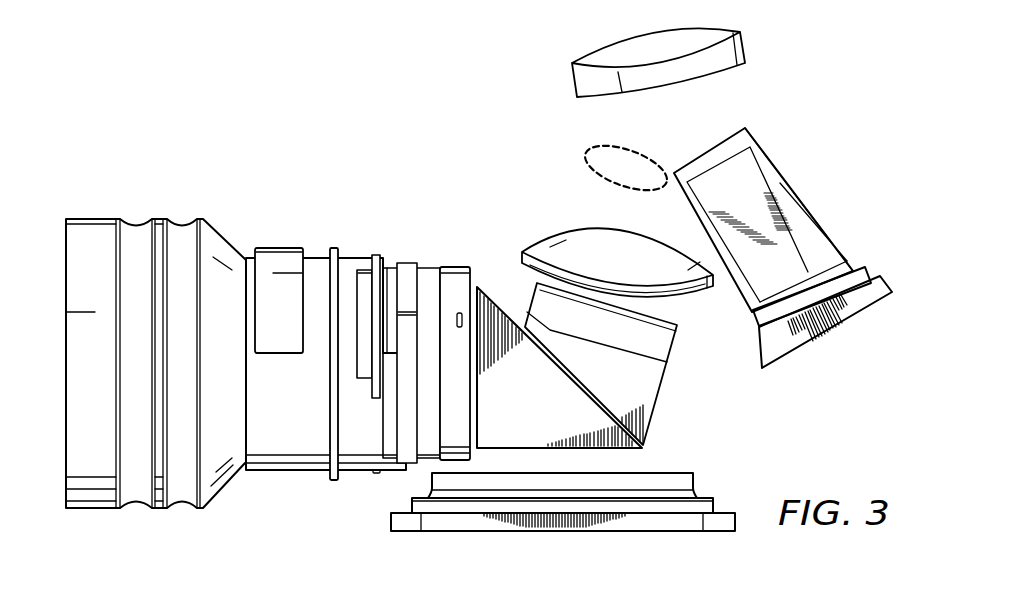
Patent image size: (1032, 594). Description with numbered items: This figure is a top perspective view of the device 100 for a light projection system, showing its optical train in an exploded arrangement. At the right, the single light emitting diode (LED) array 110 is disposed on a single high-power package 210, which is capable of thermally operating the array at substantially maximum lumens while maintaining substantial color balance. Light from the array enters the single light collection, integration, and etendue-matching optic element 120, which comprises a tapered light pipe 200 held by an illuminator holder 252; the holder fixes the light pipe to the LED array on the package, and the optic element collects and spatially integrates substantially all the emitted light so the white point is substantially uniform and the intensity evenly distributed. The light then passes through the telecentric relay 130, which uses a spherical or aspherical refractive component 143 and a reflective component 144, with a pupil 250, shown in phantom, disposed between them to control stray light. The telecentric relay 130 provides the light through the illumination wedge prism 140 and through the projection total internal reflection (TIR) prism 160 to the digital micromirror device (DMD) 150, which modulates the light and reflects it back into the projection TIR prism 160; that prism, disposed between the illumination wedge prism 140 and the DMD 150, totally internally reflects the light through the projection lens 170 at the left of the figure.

The device 100 is at (360, 90).
The projection lens 170 is at (250, 210).
The projection total internal reflection (TIR) prism 160 is at (548, 417).
The illumination wedge prism 140 is at (646, 390).
The telecentric relay 130 is at (548, 167).
The refractive component 143 is at (545, 233).
The pupil 250 is at (633, 151).
The reflective component 144 is at (748, 45).
The single light collection, integration, and etendue-matching optic element 120 is at (772, 142).
The illuminator holder 252 is at (782, 181).
The tapered light pipe 200 is at (730, 163).
The single light emitting diode (LED) array 110 is at (857, 263).
The single high-power package 210 is at (840, 338).
The digital micromirror device (DMD) 150 is at (388, 520).